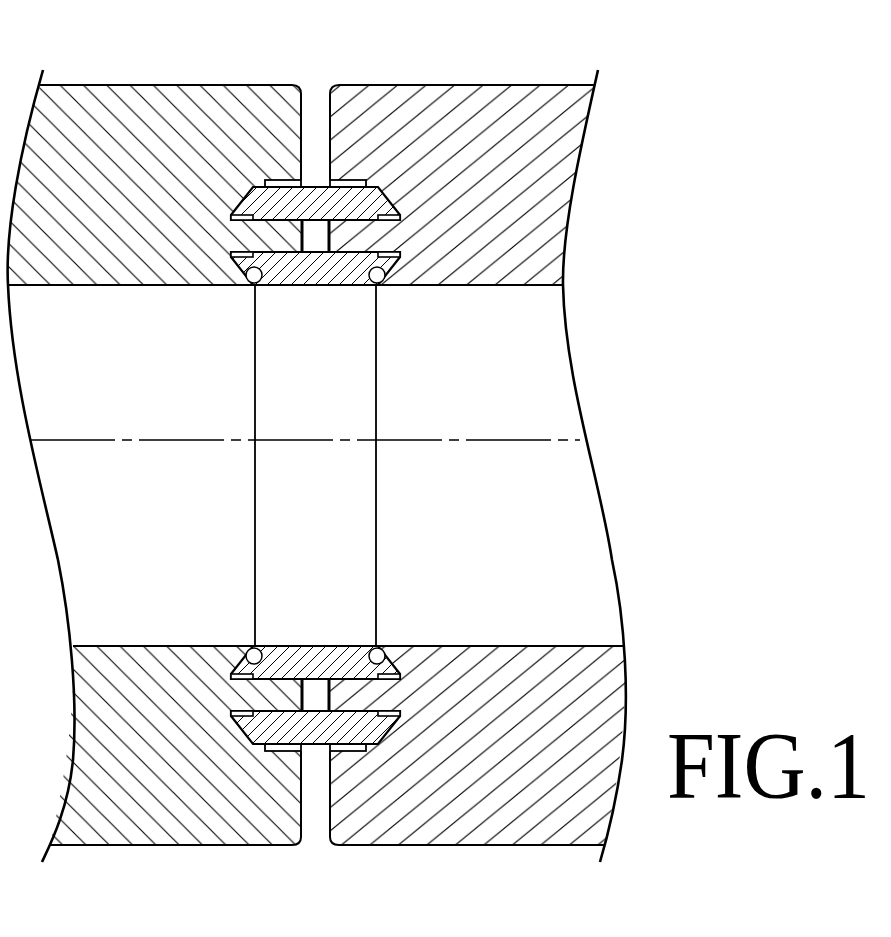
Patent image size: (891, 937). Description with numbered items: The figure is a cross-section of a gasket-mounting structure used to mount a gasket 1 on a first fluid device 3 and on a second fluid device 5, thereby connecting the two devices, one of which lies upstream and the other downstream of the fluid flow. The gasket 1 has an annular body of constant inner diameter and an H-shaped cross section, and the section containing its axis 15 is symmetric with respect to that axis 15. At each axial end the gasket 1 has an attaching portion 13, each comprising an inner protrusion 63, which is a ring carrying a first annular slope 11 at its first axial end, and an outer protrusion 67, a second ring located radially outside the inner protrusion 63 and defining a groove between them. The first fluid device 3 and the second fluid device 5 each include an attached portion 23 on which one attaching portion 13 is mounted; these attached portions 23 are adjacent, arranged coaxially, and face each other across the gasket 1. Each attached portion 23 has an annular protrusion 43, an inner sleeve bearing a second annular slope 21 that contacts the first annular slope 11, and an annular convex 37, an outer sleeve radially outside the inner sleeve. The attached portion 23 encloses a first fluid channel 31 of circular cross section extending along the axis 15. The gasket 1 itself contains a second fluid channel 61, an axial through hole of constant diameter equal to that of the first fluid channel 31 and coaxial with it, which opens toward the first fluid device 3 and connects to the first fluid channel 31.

The gasket 1 is at (322, 783).
The first fluid device 3 is at (74, 54).
The second fluid device 5 is at (538, 50).
The first annular slope 11 is at (248, 290).
The attaching portion 13 is at (403, 203).
The axis 15 is at (292, 446).
The second annular slope 21 is at (253, 288).
The attached portion 23 is at (279, 76).
The first fluid channel 31 is at (89, 506).
The annular convex 37 is at (283, 193).
The annular protrusion 43 is at (233, 278).
The second fluid channel 61 is at (303, 419).
The inner protrusion 63 is at (273, 287).
The outer protrusion 67 is at (272, 232).